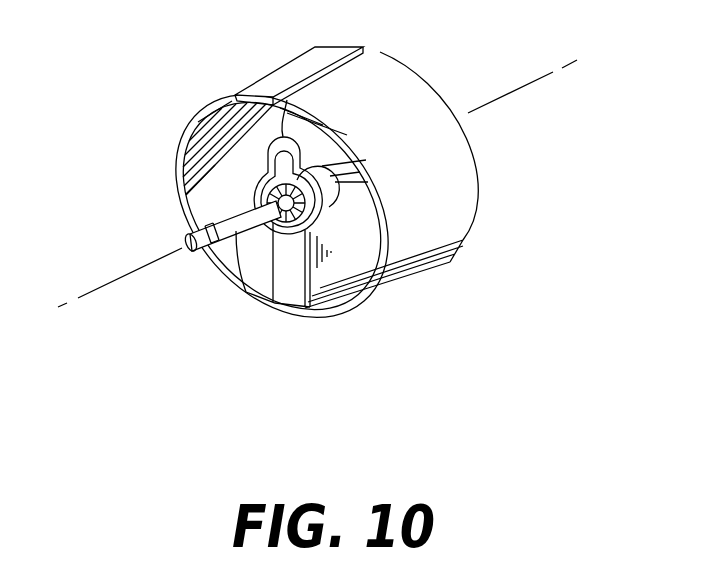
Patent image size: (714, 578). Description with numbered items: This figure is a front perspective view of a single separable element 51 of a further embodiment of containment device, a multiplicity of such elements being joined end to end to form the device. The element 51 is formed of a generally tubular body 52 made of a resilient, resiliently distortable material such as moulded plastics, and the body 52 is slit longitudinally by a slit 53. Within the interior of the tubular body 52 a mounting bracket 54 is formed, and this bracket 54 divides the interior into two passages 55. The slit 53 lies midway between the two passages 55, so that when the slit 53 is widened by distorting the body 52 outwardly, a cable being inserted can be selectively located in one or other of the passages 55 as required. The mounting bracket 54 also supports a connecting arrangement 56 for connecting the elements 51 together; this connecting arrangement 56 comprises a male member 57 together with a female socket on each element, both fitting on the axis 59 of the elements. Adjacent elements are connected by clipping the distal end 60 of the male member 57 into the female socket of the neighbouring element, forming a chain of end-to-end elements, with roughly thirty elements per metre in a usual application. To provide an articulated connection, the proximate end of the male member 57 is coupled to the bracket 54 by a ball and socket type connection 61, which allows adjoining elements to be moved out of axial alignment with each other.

The separable element 51 is at (277, 67).
The tubular body 52 is at (464, 206).
The slit 53 is at (347, 62).
The mounting bracket 54 is at (329, 270).
The passages 55 is at (223, 192).
The connecting arrangement 56 is at (262, 254).
The male member 57 is at (243, 280).
The axis 59 is at (533, 84).
The distal end of male member 60 is at (224, 275).
The ball and socket type connection 61 is at (323, 178).